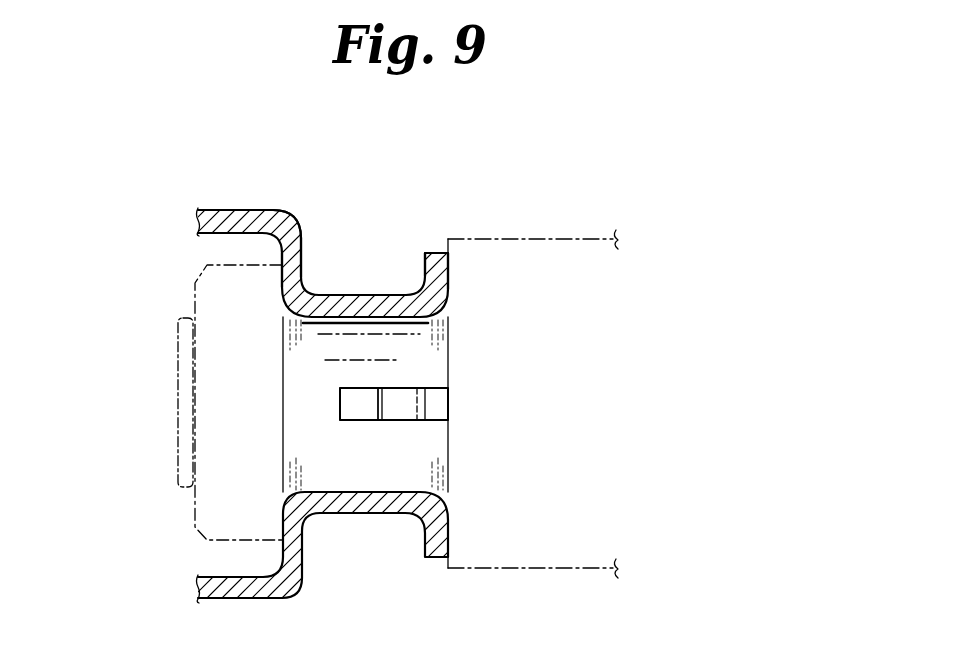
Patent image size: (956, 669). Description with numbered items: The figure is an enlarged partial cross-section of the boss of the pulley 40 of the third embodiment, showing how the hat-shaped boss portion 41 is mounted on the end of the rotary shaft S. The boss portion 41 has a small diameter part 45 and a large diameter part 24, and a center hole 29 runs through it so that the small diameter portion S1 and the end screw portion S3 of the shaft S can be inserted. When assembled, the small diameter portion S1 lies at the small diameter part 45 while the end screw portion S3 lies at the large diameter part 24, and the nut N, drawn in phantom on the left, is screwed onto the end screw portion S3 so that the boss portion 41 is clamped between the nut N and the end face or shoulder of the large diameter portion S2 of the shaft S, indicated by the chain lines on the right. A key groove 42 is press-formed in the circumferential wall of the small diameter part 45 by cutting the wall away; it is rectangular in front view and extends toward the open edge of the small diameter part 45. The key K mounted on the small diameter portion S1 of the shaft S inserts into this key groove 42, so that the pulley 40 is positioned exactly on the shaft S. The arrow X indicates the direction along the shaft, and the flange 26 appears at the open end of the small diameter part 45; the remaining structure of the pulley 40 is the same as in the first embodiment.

The large diameter part 24 is at (243, 210).
The pulley 40 is at (272, 210).
The boss portion 41 is at (303, 233).
The small diameter part 45 is at (366, 294).
The inner flange 26 is at (437, 260).
The center hole 29 is at (414, 493).
The key groove 42 is at (386, 388).
The key K is at (405, 415).
The axial direction X is at (485, 404).
The rotary shaft S is at (548, 240).
The small diameter portion S1 is at (362, 478).
The large diameter portion S2 is at (533, 545).
The end screw portion S3 is at (187, 468).
The nut N is at (207, 303).